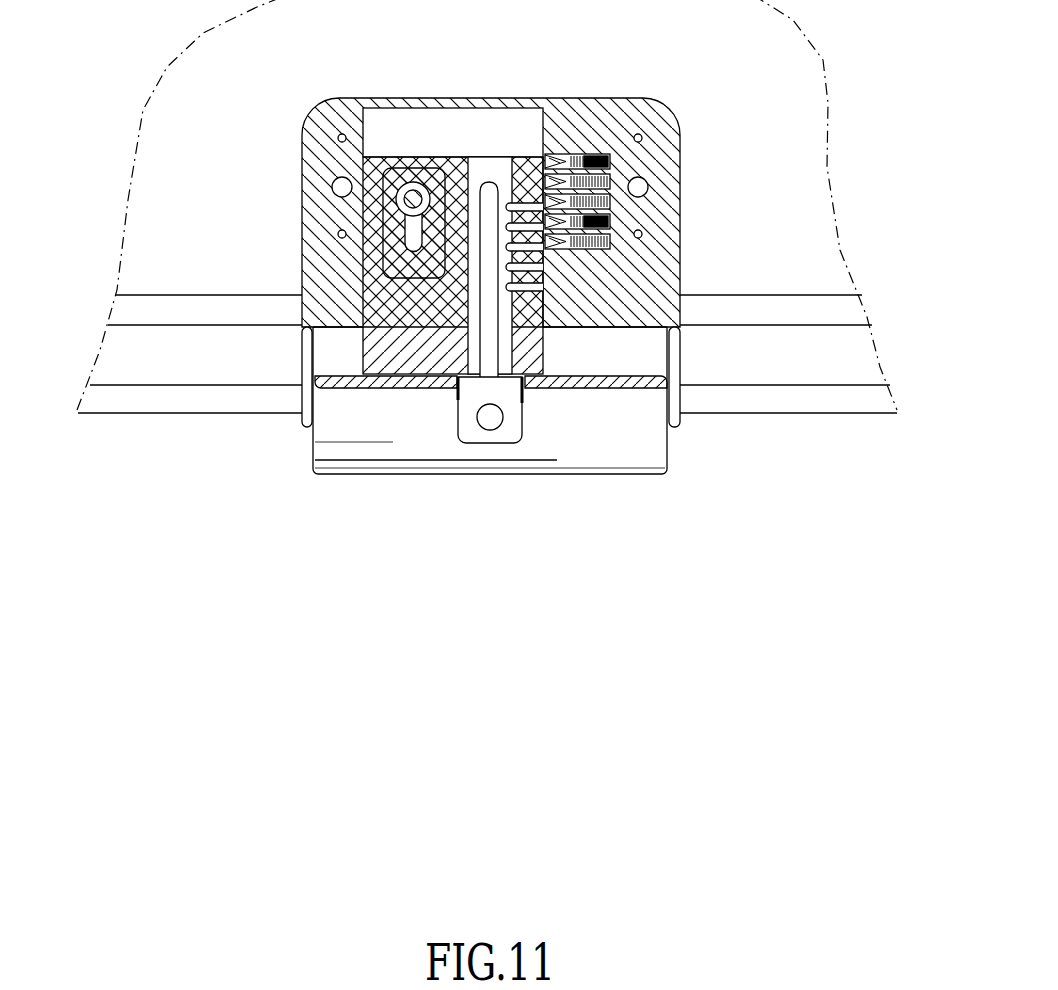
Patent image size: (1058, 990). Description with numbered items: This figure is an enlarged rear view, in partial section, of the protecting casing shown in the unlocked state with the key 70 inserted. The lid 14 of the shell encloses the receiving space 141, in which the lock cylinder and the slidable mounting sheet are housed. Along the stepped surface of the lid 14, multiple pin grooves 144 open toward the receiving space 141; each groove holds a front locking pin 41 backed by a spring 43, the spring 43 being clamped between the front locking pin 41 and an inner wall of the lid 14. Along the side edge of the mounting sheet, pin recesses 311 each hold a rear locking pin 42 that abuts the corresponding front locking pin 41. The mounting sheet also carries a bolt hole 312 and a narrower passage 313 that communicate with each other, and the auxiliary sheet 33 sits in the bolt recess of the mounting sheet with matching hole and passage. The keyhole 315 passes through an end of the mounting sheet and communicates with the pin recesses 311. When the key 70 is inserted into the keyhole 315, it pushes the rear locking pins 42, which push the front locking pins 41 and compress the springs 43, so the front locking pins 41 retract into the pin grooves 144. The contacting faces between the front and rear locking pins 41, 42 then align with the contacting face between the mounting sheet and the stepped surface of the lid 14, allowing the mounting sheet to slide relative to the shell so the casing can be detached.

The lid 14 is at (668, 133).
The receiving space 141 is at (483, 120).
The pin grooves 144 is at (545, 157).
The auxiliary sheet 33 is at (423, 178).
The bolt hole 312 is at (398, 192).
The passage 313 is at (404, 240).
The pin recesses 311 is at (524, 293).
The rear locking pins 42 is at (528, 292).
The front locking pins 41 is at (552, 163).
The springs 43 is at (608, 163).
The keyhole 315 is at (463, 352).
The key 70 is at (468, 432).